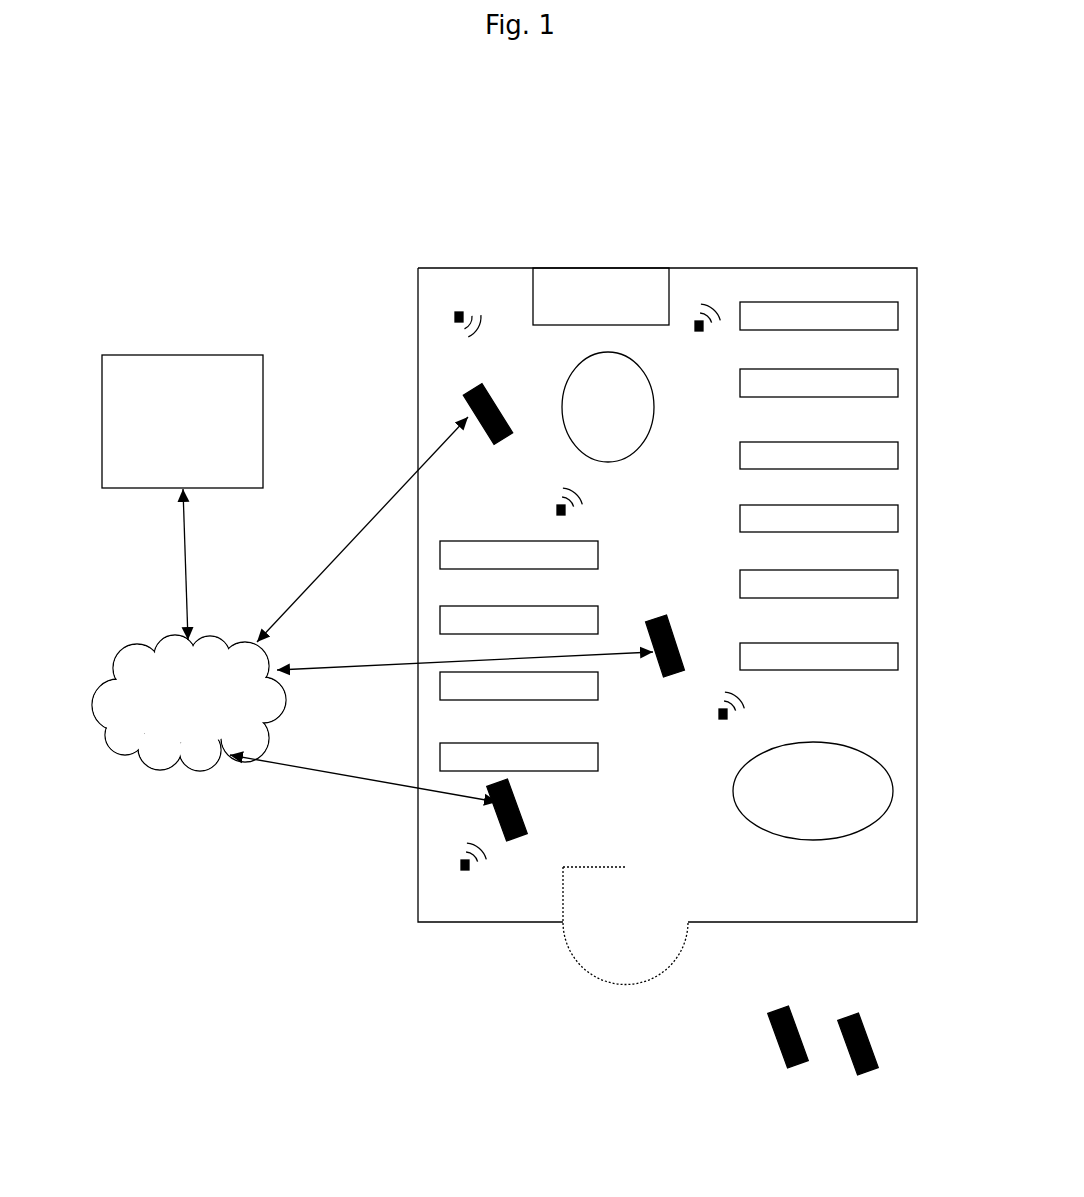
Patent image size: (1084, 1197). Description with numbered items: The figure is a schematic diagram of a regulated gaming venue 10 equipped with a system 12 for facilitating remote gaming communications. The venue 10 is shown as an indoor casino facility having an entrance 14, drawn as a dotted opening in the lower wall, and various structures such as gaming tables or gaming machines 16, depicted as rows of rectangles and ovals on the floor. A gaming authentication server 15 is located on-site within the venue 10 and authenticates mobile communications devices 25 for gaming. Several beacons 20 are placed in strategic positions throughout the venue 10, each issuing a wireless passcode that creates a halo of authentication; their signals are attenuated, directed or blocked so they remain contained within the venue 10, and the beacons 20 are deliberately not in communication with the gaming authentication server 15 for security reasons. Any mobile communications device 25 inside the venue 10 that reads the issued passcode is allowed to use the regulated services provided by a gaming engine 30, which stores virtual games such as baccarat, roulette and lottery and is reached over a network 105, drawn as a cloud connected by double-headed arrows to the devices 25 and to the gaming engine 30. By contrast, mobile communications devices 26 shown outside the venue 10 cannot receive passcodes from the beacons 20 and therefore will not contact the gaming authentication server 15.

The regulated gaming venue 10 is at (827, 277).
The system for facilitating remote gaming communications 12 is at (922, 170).
The entrance 14 is at (617, 997).
The gaming authentication server 15 is at (622, 278).
The gaming tables or gaming machines 16 is at (857, 765).
The beacon 20 is at (465, 311).
The mobile communications device 25 is at (495, 402).
The mobile communications devices outside of the venue 26 is at (785, 1012).
The gaming engine 30 is at (120, 380).
The network 105 is at (138, 670).